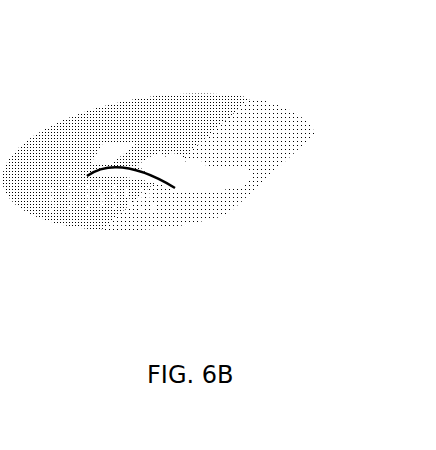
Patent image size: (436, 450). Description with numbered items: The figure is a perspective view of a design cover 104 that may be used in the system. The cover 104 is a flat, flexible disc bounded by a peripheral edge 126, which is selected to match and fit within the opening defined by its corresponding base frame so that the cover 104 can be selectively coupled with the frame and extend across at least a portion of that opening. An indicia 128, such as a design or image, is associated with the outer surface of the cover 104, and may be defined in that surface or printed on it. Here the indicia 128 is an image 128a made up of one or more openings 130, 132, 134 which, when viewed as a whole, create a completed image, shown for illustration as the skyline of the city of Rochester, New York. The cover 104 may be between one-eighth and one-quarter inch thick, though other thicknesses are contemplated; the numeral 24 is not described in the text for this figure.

The cover 104 is at (137, 47).
The substrate 24 is at (72, 132).
The peripheral edge 126 is at (122, 107).
The indicia 128 is at (160, 153).
The image 128a is at (195, 173).
The opening 130 is at (243, 130).
The opening 132 is at (223, 170).
The opening 134 is at (143, 184).